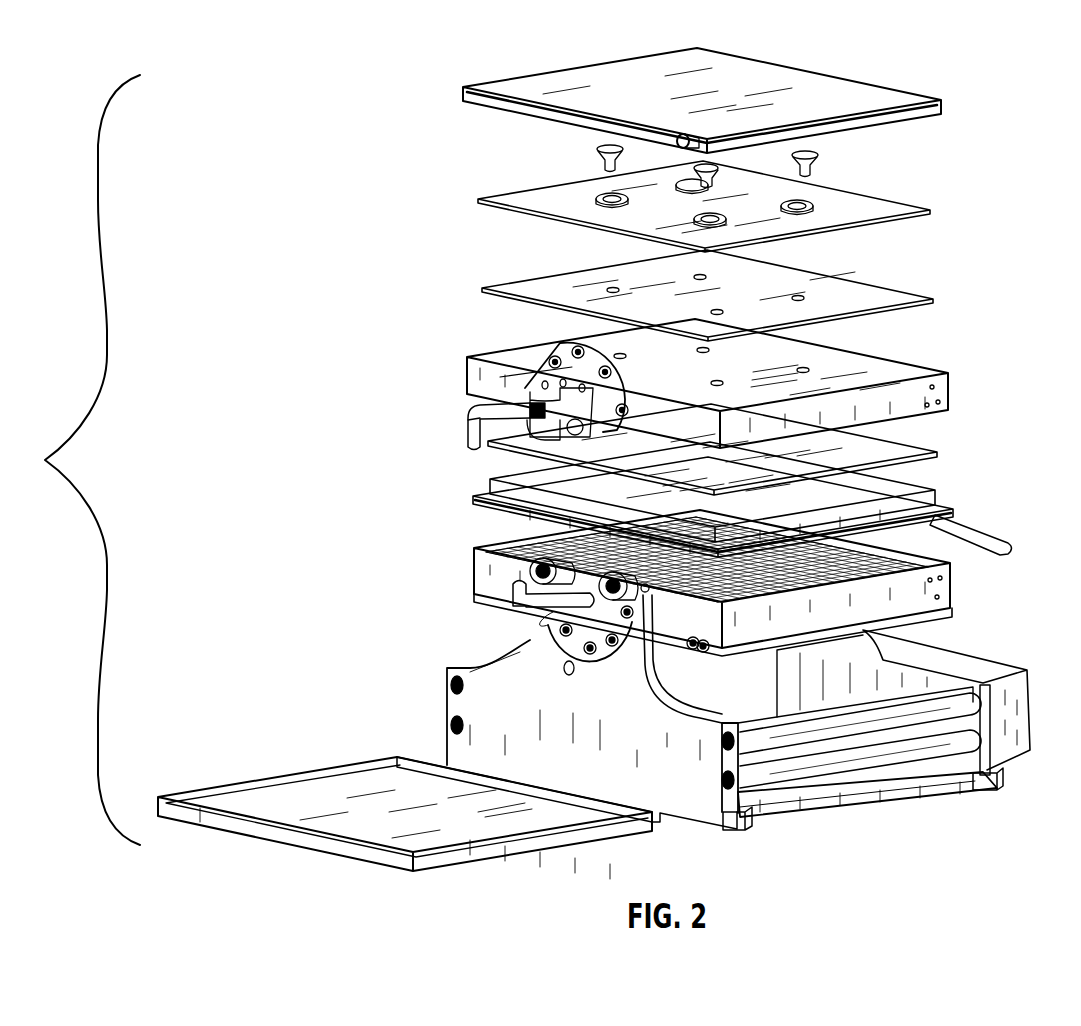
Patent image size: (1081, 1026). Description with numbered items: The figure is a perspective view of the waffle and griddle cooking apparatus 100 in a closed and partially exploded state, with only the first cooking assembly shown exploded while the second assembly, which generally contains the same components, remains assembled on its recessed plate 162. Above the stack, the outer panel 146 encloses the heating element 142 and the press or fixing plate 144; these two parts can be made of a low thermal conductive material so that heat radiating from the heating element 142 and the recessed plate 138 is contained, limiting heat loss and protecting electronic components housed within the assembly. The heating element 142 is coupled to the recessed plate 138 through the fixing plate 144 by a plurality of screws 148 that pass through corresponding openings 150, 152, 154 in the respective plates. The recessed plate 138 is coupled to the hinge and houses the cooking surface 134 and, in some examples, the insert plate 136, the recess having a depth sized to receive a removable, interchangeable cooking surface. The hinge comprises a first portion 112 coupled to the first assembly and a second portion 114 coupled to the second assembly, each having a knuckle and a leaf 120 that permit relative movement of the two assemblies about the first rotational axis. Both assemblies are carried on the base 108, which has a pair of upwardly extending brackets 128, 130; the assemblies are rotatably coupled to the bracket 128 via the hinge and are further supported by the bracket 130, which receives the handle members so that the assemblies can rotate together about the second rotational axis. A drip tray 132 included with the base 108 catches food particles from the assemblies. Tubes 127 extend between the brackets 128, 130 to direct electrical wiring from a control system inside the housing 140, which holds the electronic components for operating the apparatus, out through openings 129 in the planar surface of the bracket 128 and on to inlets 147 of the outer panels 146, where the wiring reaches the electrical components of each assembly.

The waffle and griddle cooking apparatus 100 is at (362, 135).
The base 108 is at (475, 668).
The first portion 112 is at (560, 343).
The second portion 114 is at (552, 624).
The leaf 120 is at (480, 410).
The tubes 127 is at (792, 773).
The bracket 128 is at (455, 708).
The openings 129 is at (716, 745).
The bracket 130 is at (990, 790).
The drip tray 132 is at (312, 790).
The cooking surface 134 is at (950, 500).
The insert plate 136 is at (930, 440).
The recessed plate 138 is at (915, 373).
The housing 140 is at (983, 663).
The heating element 142 is at (897, 293).
The fixing plate 144 is at (888, 210).
The outer panel 146 is at (870, 93).
The inlets 147 is at (690, 132).
The screws 148 is at (590, 153).
The openings 150 is at (597, 195).
The openings 152 is at (610, 288).
The openings 154 is at (810, 368).
The recessed plate 162 is at (955, 595).